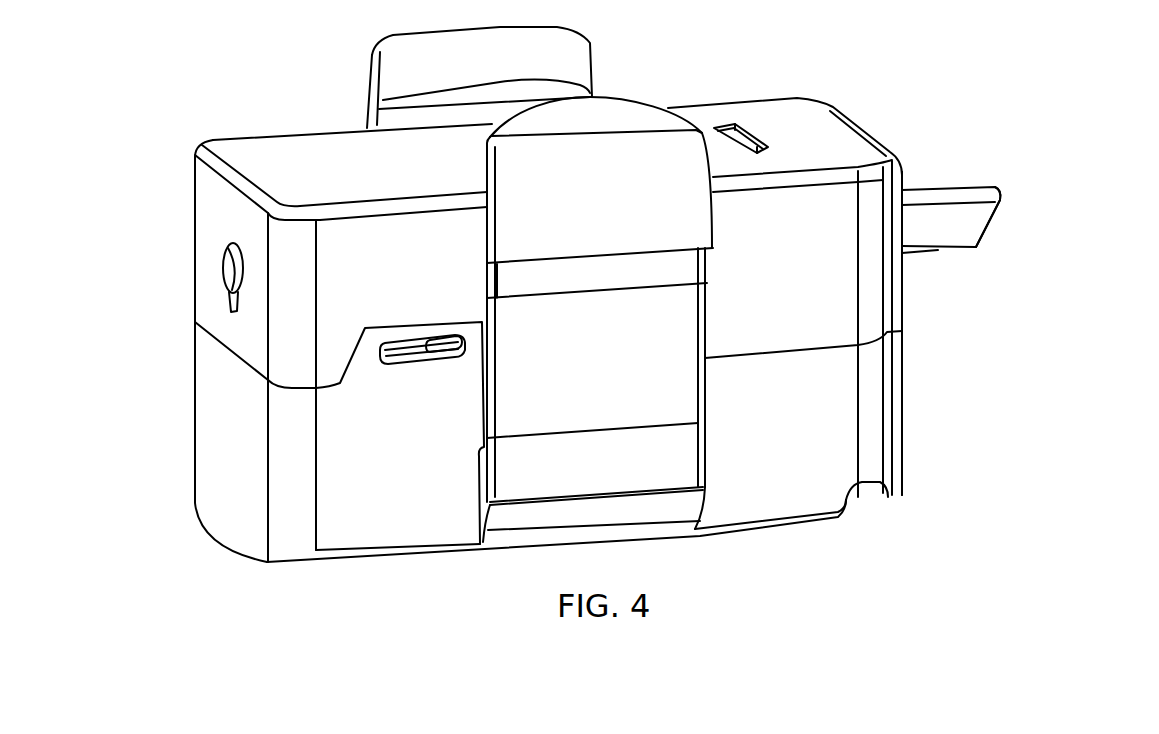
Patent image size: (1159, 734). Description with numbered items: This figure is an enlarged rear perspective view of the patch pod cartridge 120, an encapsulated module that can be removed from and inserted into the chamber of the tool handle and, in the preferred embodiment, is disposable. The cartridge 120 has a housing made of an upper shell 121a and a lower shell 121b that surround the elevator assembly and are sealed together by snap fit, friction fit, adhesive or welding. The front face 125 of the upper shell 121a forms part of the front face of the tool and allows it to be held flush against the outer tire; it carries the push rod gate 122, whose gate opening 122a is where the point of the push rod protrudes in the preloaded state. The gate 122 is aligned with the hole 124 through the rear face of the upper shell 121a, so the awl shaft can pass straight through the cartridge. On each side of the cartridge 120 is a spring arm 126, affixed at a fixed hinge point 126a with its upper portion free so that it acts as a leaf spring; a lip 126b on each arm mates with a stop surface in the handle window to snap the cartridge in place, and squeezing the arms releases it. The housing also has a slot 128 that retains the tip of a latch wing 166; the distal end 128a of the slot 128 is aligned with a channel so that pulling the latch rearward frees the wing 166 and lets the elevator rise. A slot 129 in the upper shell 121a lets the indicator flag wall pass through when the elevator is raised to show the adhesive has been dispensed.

The patch pod cartridge 120 is at (128, 128).
The upper shell 121a is at (276, 162).
The lower shell 121b is at (352, 562).
The push rod gate 122 is at (940, 250).
The gate opening 122a is at (1000, 216).
The hole 124 is at (230, 280).
The front face 125 is at (935, 376).
The spring arm 126 is at (626, 209).
The fixed hinge point 126a is at (675, 510).
The lip 126b is at (573, 263).
The slot 128 is at (418, 363).
The distal end of slot 128a is at (387, 343).
The slot 129 is at (728, 128).
The wing 166 is at (445, 340).